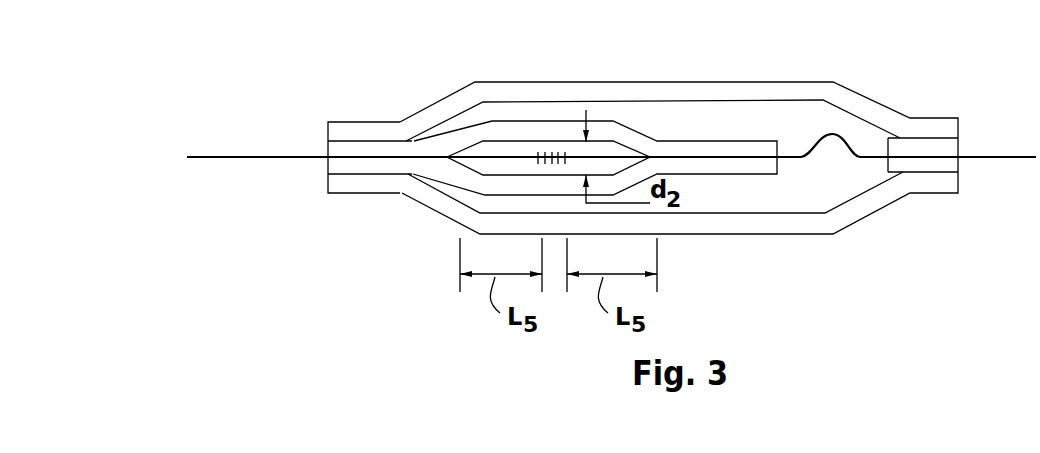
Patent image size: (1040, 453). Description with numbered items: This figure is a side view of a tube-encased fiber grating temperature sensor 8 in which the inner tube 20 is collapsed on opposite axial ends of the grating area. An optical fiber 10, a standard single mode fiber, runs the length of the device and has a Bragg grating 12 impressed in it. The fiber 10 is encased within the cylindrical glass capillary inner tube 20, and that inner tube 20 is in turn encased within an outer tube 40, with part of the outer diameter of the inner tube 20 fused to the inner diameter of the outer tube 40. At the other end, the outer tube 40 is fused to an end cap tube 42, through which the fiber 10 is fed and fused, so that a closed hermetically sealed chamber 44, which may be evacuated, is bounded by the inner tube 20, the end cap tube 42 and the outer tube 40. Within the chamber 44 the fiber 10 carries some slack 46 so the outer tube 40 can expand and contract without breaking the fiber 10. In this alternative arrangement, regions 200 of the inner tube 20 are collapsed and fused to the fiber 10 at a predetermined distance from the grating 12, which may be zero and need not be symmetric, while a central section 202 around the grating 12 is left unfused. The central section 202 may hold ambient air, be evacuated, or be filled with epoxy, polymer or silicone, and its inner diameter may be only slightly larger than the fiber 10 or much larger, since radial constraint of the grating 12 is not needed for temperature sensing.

The pressure-isolated Bragg grating temperature sensor 8 is at (446, 68).
The optical fiber 10 is at (295, 163).
The Bragg grating 12 is at (538, 152).
The inner tube 20 is at (323, 144).
The outer tube 40 is at (795, 93).
The end cap tube 42 is at (920, 147).
The chamber 44 is at (829, 196).
The slack 46 is at (867, 123).
The regions 200 is at (360, 157).
The central section 202 is at (603, 170).